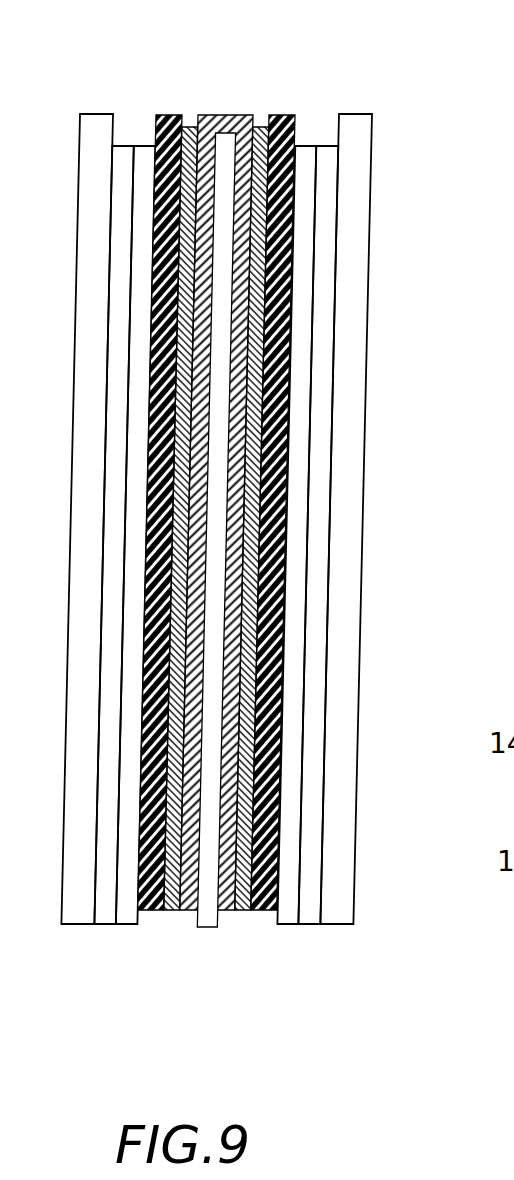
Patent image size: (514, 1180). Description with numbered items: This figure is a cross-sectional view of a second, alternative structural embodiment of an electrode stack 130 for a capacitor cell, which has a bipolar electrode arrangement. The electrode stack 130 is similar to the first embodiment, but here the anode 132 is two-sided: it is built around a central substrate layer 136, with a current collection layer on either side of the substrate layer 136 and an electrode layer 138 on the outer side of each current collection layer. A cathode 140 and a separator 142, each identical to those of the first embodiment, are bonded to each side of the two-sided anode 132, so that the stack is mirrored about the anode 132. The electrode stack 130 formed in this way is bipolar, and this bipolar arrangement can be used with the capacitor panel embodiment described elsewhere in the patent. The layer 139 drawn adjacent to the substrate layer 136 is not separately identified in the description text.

The electrode stack assembly 130 is at (378, 313).
The electrochemical cell 132 is at (182, 100).
The center current collector 136 is at (212, 928).
The separator layer 138 is at (178, 481).
The electrode layer 139 is at (186, 912).
The end plates 140 is at (138, 935).
The outer current collector electrode 142 is at (157, 115).